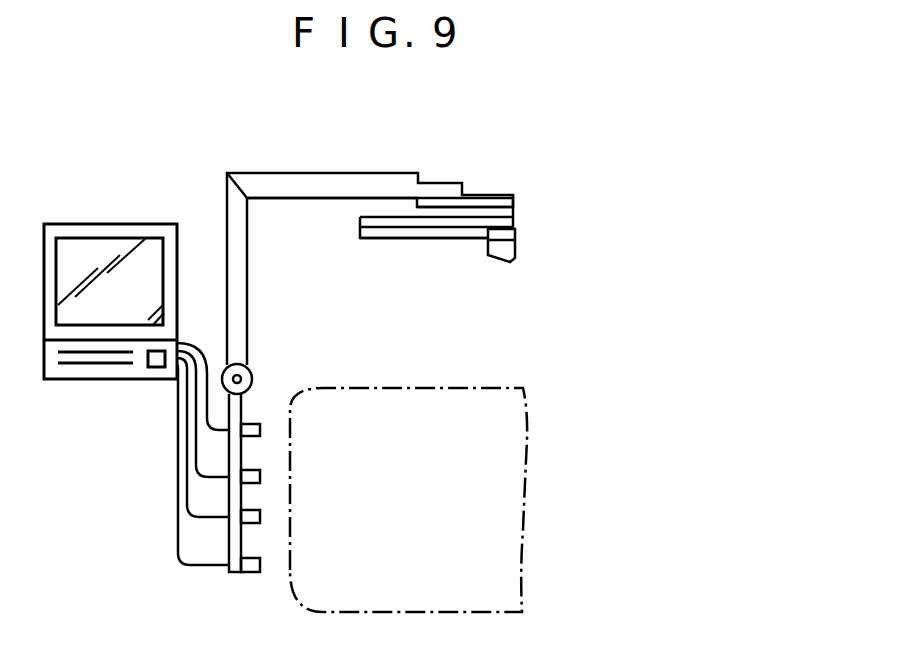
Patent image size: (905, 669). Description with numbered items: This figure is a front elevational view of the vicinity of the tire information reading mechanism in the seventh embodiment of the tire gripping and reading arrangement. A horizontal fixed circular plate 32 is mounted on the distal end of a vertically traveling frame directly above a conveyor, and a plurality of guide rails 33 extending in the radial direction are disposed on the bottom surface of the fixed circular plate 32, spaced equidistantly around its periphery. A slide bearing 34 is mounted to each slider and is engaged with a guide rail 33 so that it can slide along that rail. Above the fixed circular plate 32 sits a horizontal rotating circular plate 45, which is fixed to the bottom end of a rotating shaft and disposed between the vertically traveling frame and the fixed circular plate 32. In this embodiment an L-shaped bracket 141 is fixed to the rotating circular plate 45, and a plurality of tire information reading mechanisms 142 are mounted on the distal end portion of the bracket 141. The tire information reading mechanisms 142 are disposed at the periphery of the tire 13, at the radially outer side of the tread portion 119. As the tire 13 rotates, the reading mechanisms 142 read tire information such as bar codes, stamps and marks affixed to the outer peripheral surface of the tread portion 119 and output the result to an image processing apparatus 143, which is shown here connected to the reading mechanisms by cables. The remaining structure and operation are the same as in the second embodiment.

The tire 13 is at (462, 382).
The tread portion 119 is at (288, 572).
The L-shaped bracket 141 is at (240, 328).
The tire information reading mechanism 142 is at (263, 476).
The image processing apparatus 143 is at (158, 224).
The fixed circular plate 32 is at (360, 217).
The guide rail 33 is at (410, 229).
The slide bearing 34 is at (513, 237).
The rotating circular plate 45 is at (490, 195).